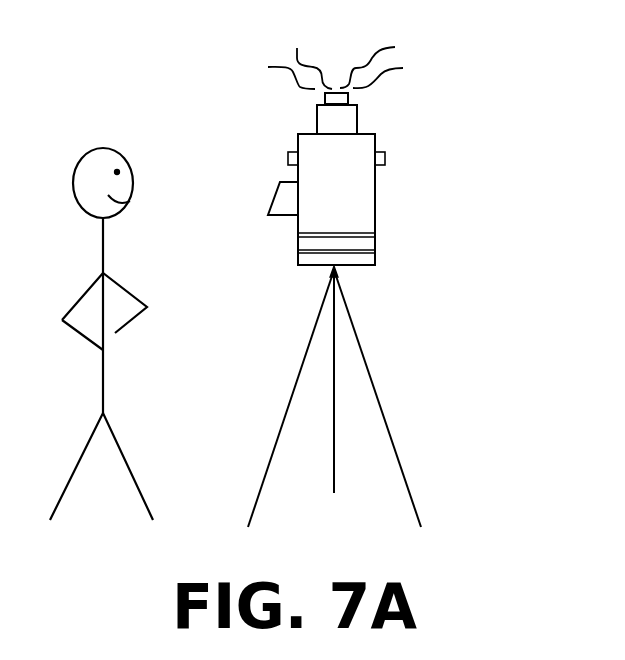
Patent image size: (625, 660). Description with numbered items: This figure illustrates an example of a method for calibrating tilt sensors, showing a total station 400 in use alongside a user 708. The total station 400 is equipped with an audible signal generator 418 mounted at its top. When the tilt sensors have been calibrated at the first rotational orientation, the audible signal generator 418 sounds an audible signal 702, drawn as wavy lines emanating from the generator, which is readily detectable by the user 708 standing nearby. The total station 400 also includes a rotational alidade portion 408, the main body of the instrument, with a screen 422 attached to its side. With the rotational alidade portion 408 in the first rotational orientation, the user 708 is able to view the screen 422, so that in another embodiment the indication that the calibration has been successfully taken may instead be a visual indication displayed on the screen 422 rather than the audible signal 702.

The total station 400 is at (352, 52).
The rotational alidade portion 408 is at (376, 187).
The audible signal generator 418 is at (349, 100).
The audible signal 702 is at (417, 41).
The screen 422 is at (283, 217).
The user 708 is at (102, 373).